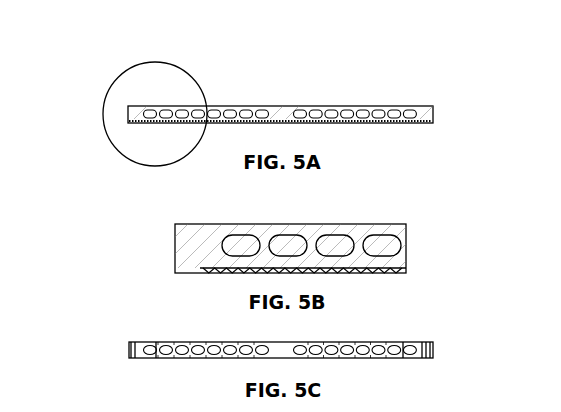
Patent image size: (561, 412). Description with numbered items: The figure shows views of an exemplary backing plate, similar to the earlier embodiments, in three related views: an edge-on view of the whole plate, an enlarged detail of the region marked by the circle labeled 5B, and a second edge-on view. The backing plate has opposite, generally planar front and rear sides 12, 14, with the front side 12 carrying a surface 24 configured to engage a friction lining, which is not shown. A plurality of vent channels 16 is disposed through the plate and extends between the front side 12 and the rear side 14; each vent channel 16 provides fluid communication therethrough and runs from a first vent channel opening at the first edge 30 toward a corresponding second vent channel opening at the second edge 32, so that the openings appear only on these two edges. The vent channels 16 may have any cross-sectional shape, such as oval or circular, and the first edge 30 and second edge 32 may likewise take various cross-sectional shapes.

In FIG. 5A, the front side 12 is at (274, 122).
In FIG. 5A, the rear side 14 is at (278, 107).
In FIG. 5B, the rear side 14 is at (389, 219).
In FIG. 5A, the vent channels 16 is at (403, 107).
In FIG. 5B, the vent channels 16 is at (292, 245).
In FIG. 5C, the vent channels 16 is at (382, 355).
In FIG. 5A, the surface 24 is at (145, 123).
In FIG. 5B, the surface 24 is at (193, 267).
In FIG. 5A, the first edge 30 is at (354, 107).
In FIG. 5C, the second edge 32 is at (278, 342).
In FIG. 5A, the detail circle for FIG. 5B is at (120, 73).